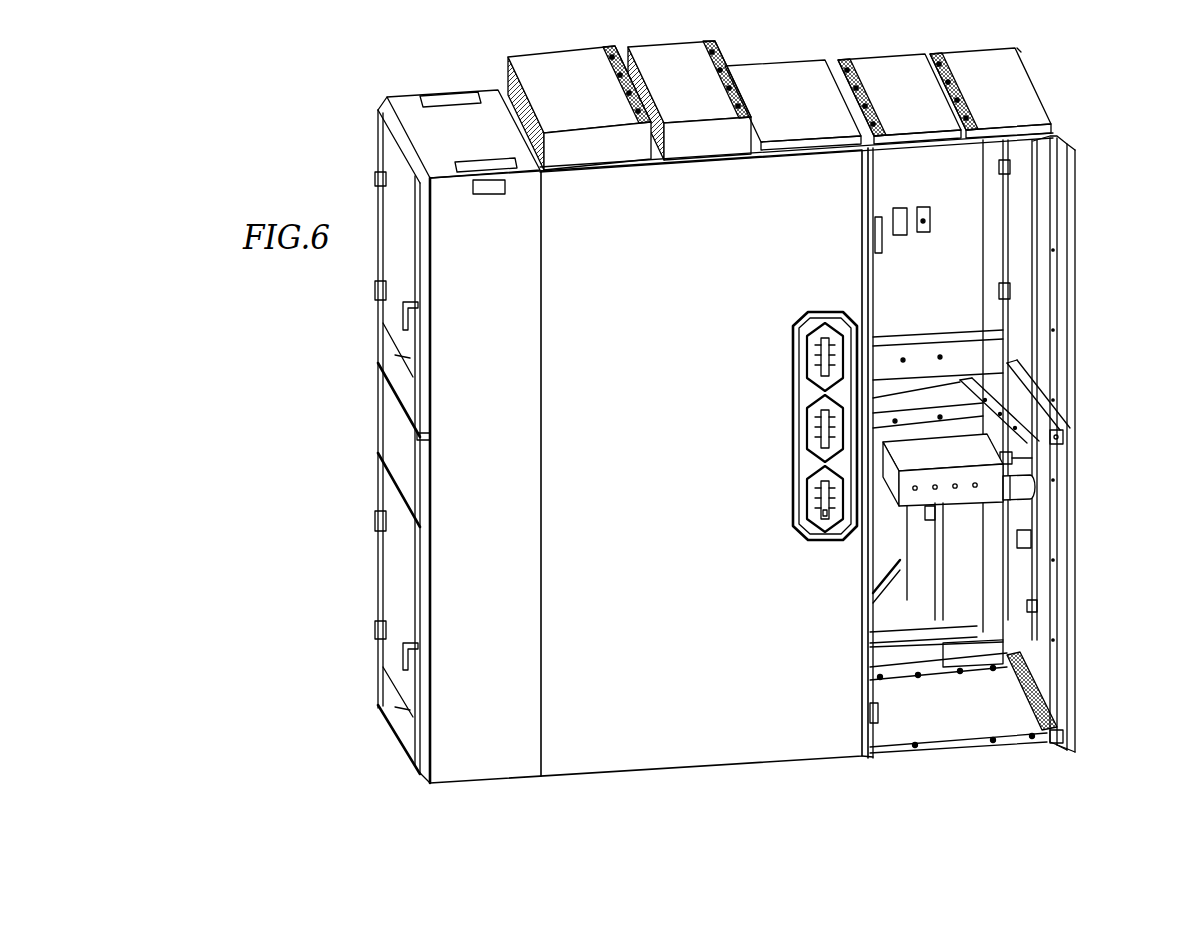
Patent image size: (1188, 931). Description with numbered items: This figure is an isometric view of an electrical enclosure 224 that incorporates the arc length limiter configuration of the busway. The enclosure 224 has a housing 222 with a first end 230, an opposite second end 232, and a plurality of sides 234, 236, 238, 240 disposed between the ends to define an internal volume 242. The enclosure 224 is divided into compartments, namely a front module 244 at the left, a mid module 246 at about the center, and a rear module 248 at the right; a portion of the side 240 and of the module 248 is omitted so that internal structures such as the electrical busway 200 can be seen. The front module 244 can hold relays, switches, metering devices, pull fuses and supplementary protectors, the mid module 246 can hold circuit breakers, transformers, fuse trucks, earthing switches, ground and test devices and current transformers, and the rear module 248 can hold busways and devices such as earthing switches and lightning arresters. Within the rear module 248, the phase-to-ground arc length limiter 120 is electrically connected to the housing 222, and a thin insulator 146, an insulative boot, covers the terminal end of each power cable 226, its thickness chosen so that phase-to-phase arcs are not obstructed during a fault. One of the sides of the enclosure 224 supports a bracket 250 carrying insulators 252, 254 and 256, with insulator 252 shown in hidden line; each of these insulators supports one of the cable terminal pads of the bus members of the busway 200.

The phase-to-ground arc length limiter 120 is at (997, 392).
The insulator 146 is at (905, 410).
The electrical busway 200 is at (888, 603).
The housing 222 is at (945, 390).
The electrical enclosure 224 is at (1078, 305).
The power cable 226 is at (947, 603).
The first end 230 is at (438, 122).
The second end 232 is at (845, 753).
The side 234 is at (388, 411).
The side 236 is at (1075, 549).
The side 238 is at (1022, 66).
The side 240 is at (563, 702).
The internal volume 242 is at (900, 172).
The front module 244 is at (457, 644).
The mid module 246 is at (588, 590).
The module 248 is at (948, 708).
The bracket 250 is at (1040, 490).
The insulator 252 is at (1062, 418).
The insulator 254 is at (1008, 461).
The insulator 256 is at (1017, 492).